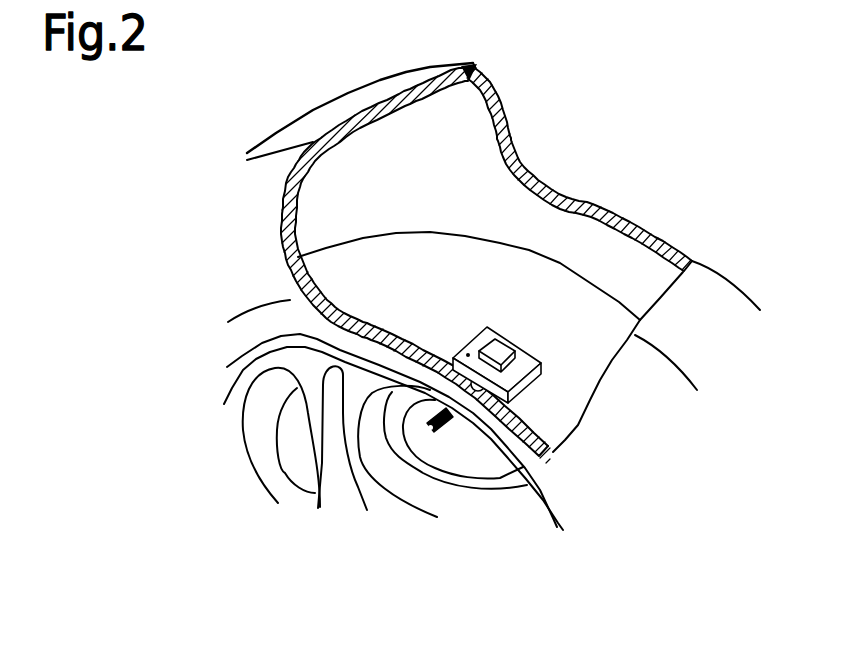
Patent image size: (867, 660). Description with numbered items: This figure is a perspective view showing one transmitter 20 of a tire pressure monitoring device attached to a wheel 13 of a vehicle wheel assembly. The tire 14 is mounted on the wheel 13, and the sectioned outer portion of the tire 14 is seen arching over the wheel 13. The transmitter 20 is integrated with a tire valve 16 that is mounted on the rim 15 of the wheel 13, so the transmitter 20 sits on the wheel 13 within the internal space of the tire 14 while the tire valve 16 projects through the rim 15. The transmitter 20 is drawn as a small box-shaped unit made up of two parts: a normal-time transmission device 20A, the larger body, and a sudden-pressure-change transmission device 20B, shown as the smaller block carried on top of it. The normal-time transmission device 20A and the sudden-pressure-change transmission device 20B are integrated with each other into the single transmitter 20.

The wheel 13 is at (451, 238).
The tire 14 is at (491, 80).
The rim 15 is at (549, 508).
The tire valve 16 is at (449, 418).
The transmitter 20 is at (551, 344).
The normal-time transmission device 20A is at (540, 392).
The sudden-pressure-change transmission device 20B is at (514, 342).